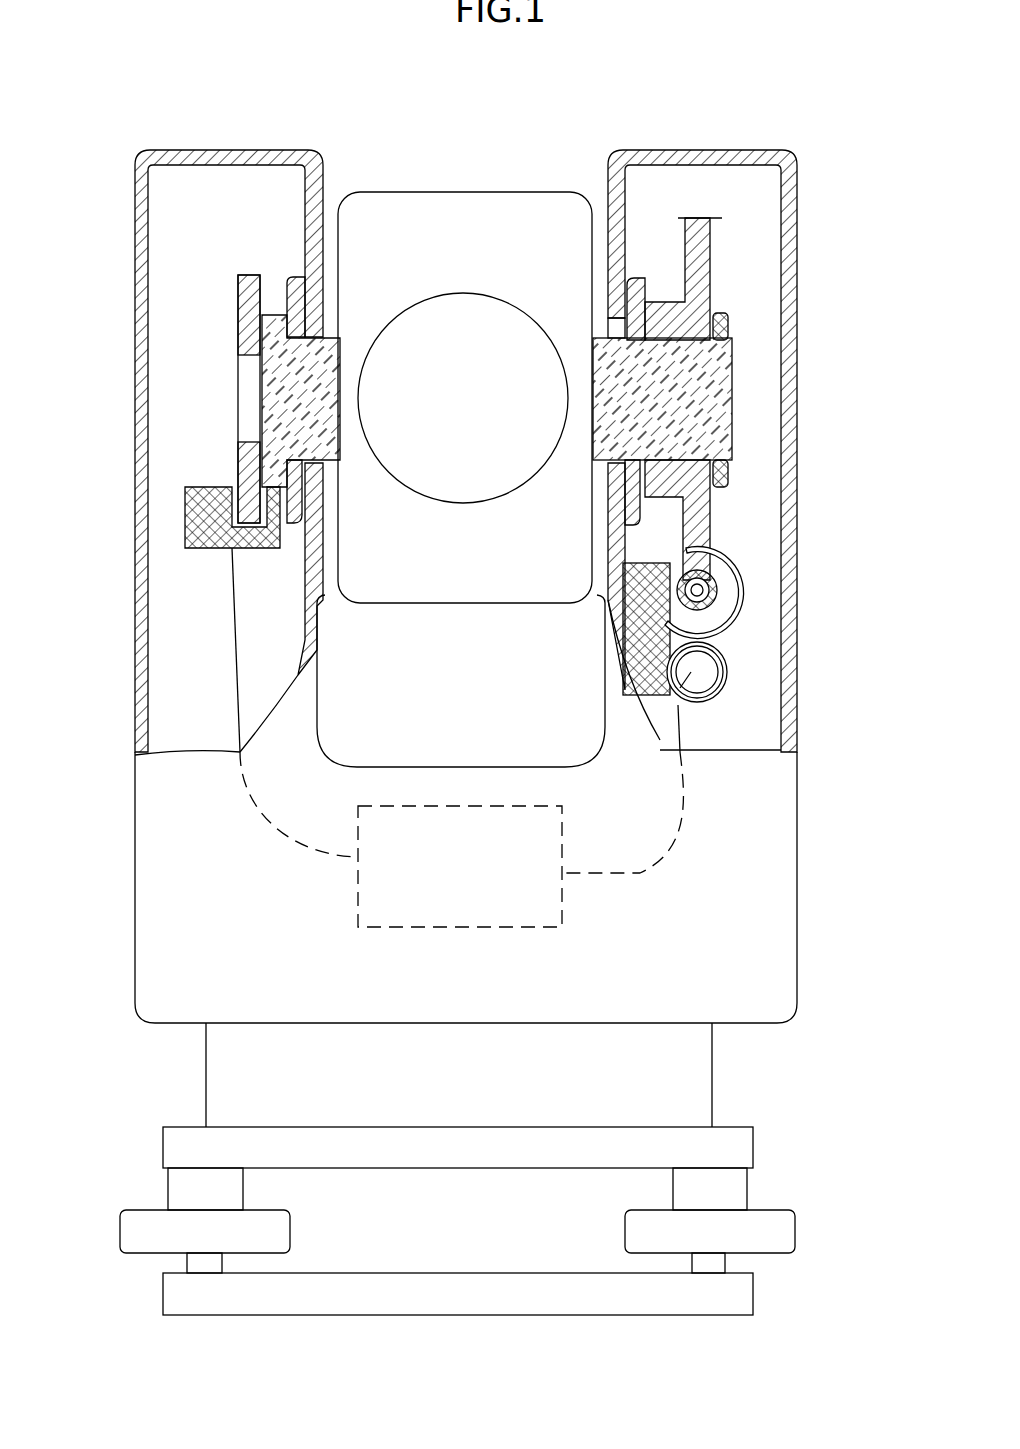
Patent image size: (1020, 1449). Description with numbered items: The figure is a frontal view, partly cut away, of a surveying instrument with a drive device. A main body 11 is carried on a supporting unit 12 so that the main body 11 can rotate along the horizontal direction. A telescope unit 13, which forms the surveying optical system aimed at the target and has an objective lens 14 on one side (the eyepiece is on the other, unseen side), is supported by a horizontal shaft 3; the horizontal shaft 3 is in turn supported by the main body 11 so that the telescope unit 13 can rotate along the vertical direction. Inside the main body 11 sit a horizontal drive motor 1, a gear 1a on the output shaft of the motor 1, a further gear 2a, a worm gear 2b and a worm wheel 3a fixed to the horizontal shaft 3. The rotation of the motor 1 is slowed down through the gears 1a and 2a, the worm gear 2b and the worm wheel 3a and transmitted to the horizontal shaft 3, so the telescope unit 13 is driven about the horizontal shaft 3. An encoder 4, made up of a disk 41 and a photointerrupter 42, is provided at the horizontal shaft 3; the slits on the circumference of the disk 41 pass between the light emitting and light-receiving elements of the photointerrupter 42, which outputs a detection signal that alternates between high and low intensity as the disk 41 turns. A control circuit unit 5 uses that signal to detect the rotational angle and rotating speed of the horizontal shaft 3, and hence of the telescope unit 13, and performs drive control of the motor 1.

The horizontal drive motor 1 is at (722, 676).
The gear 1a is at (705, 690).
The gear 2a is at (745, 582).
The worm gear 2b is at (708, 608).
The horizontal shaft 3 is at (706, 408).
The worm wheel 3a is at (700, 527).
The encoder 4 is at (167, 459).
The disk 41 is at (245, 297).
The photointerrupter 42 is at (203, 550).
The control circuit unit 5 is at (378, 893).
The main body 11 is at (788, 886).
The supporting unit 12 is at (712, 1077).
The telescope unit 13 is at (458, 192).
The objective lens 14 is at (520, 306).